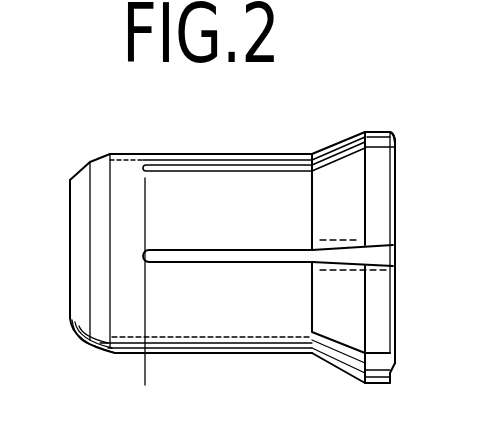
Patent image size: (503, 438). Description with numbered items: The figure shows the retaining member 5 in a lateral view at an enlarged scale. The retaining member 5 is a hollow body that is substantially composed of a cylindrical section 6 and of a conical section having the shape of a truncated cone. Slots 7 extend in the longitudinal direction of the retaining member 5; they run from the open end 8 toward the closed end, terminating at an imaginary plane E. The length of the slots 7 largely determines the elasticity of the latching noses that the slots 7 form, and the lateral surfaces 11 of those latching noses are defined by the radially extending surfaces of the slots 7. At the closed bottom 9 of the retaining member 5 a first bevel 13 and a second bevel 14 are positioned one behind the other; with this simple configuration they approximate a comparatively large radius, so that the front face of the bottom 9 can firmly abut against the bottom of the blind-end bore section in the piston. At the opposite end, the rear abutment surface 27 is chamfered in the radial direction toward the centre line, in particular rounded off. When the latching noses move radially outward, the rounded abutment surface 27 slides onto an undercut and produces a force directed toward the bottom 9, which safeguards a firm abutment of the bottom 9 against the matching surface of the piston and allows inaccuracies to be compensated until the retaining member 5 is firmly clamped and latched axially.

The retaining member 5 is at (150, 212).
The cylindrical section 6 is at (198, 197).
The slots 7 is at (290, 255).
The open end 8 is at (395, 320).
The closed bottom 9 is at (70, 297).
The lateral surfaces 11 is at (238, 262).
The first bevel 13 is at (100, 332).
The second bevel 14 is at (79, 325).
The rear abutment surface 27 is at (390, 140).
The imaginary plane E is at (148, 295).